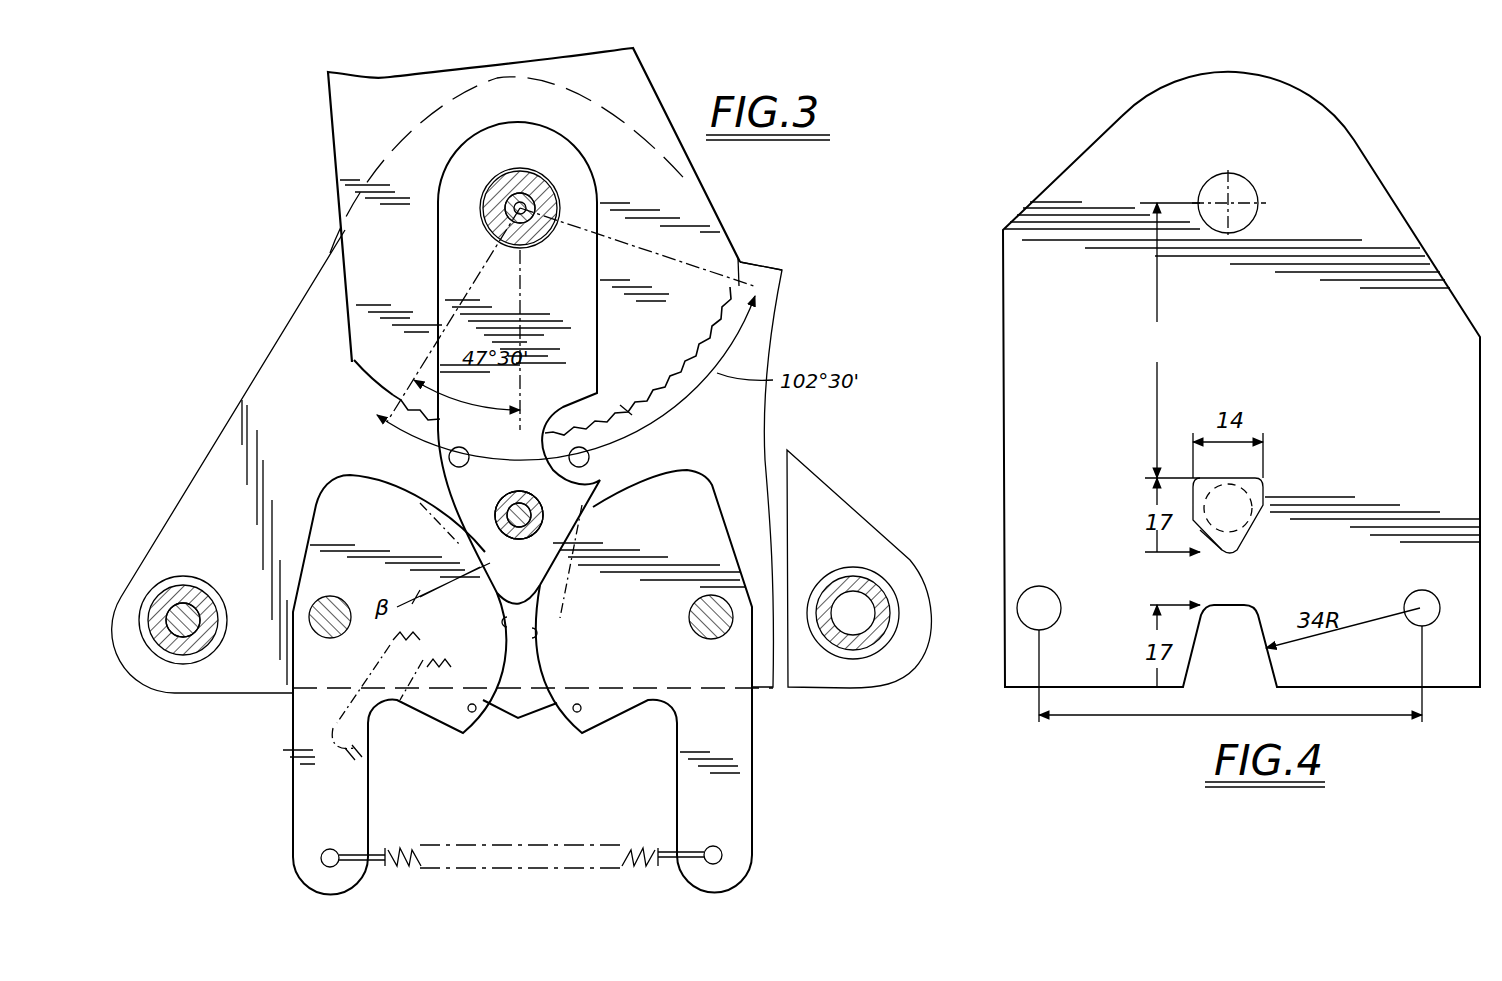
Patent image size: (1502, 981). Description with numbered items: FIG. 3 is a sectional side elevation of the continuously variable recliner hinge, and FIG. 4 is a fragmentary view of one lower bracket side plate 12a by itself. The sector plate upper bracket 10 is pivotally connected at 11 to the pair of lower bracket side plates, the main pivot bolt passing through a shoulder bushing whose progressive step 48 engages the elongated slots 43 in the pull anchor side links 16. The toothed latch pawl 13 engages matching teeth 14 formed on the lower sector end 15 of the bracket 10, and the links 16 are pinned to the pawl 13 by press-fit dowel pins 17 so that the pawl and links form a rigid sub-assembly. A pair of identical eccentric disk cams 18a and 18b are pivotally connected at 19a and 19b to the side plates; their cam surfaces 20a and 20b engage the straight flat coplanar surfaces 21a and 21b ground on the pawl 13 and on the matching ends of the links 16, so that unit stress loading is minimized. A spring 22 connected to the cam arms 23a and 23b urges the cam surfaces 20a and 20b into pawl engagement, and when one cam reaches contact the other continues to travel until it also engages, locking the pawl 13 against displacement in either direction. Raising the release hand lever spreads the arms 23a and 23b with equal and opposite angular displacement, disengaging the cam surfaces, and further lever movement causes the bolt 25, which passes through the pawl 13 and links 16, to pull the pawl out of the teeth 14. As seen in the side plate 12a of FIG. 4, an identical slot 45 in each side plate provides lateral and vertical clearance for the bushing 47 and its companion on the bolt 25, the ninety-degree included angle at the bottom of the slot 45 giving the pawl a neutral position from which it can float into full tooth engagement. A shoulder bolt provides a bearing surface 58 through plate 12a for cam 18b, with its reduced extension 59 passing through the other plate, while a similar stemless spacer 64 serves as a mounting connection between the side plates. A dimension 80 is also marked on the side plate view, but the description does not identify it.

In FIG. 3, the sector plate upper bracket 10 is at (636, 64).
In FIG. 4, the sector plate upper bracket 10 is at (1437, 625).
In FIG. 3, the pivotal connection 11 is at (489, 194).
In FIG. 3, the lower bracket side plate 12a is at (747, 247).
In FIG. 4, the lower bracket side plate 12a is at (1412, 265).
In FIG. 3, the toothed latch pawl 13 is at (592, 468).
In FIG. 4, the toothed latch pawl 13 is at (1228, 175).
In FIG. 3, the teeth 14 is at (741, 287).
In FIG. 3, the lower sector end 15 is at (716, 235).
In FIG. 3, the pull anchor side links 16 is at (628, 433).
In FIG. 3, the dowel pins 17 is at (466, 466).
In FIG. 3, the eccentric disk cam 18a is at (733, 470).
In FIG. 3, the eccentric disk cam 18b is at (333, 470).
In FIG. 3, the pivotal connection 19a is at (689, 615).
In FIG. 3, the pivotal connection 19b is at (358, 573).
In FIG. 3, the cam surface 20a is at (537, 633).
In FIG. 3, the cam surface 20b is at (503, 620).
In FIG. 3, the straight flat coplanar surface 21a is at (552, 548).
In FIG. 3, the straight flat coplanar surface 21b is at (457, 550).
In FIG. 3, the spring 22 is at (470, 842).
In FIG. 3, the cam arm 23a is at (754, 802).
In FIG. 3, the cam arm 23b is at (293, 800).
In FIG. 3, the bolt 25 is at (545, 523).
In FIG. 3, the elongated slot 43 is at (520, 166).
In FIG. 4, the slot 45 is at (1256, 481).
In FIG. 3, the bushing 47 is at (543, 510).
In FIG. 4, the bushing 47 is at (1212, 538).
In FIG. 3, the progressive step 48 is at (537, 183).
In FIG. 3, the bearing surface 58 is at (190, 694).
In FIG. 4, the reduced extension 59 is at (1170, 340).
In FIG. 3, the spacer 64 is at (843, 670).
In FIG. 4, the dimension 80 is at (1230, 700).